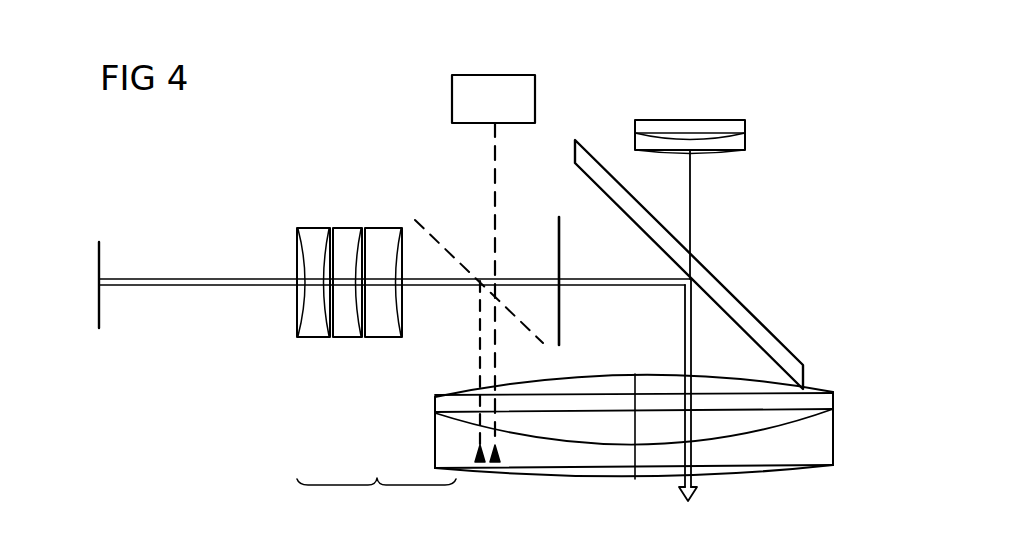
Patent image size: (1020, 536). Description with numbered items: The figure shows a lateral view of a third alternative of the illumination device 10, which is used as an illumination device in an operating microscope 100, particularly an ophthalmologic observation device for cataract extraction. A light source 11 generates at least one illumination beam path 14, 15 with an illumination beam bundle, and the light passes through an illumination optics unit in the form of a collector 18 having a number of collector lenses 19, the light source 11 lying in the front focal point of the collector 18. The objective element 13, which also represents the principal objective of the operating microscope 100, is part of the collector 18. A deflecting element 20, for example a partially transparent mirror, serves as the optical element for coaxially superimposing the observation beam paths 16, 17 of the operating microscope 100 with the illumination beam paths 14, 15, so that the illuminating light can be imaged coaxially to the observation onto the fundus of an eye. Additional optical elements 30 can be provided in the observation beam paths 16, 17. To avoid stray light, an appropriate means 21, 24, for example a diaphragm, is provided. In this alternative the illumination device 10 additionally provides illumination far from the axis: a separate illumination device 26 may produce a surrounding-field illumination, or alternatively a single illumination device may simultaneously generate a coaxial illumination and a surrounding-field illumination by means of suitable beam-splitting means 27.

The operating microscope 100 is at (810, 163).
The illumination device 10 is at (271, 394).
The light source 11 is at (101, 306).
The illumination beam path 14 is at (395, 238).
The illumination beam path 15 is at (198, 271).
The collector lenses 19 is at (348, 228).
The separate illumination device 26 is at (451, 100).
The beam-splitting means 27 is at (452, 338).
The means for avoiding stray light 21 is at (611, 281).
The means for avoiding stray light 24 is at (562, 313).
The additional optical elements 30 is at (711, 120).
The observation beam path 16 is at (742, 214).
The observation beam path 17 is at (692, 195).
The deflecting element 20 is at (731, 290).
The objective element 13 is at (835, 428).
The collector 18 is at (376, 502).